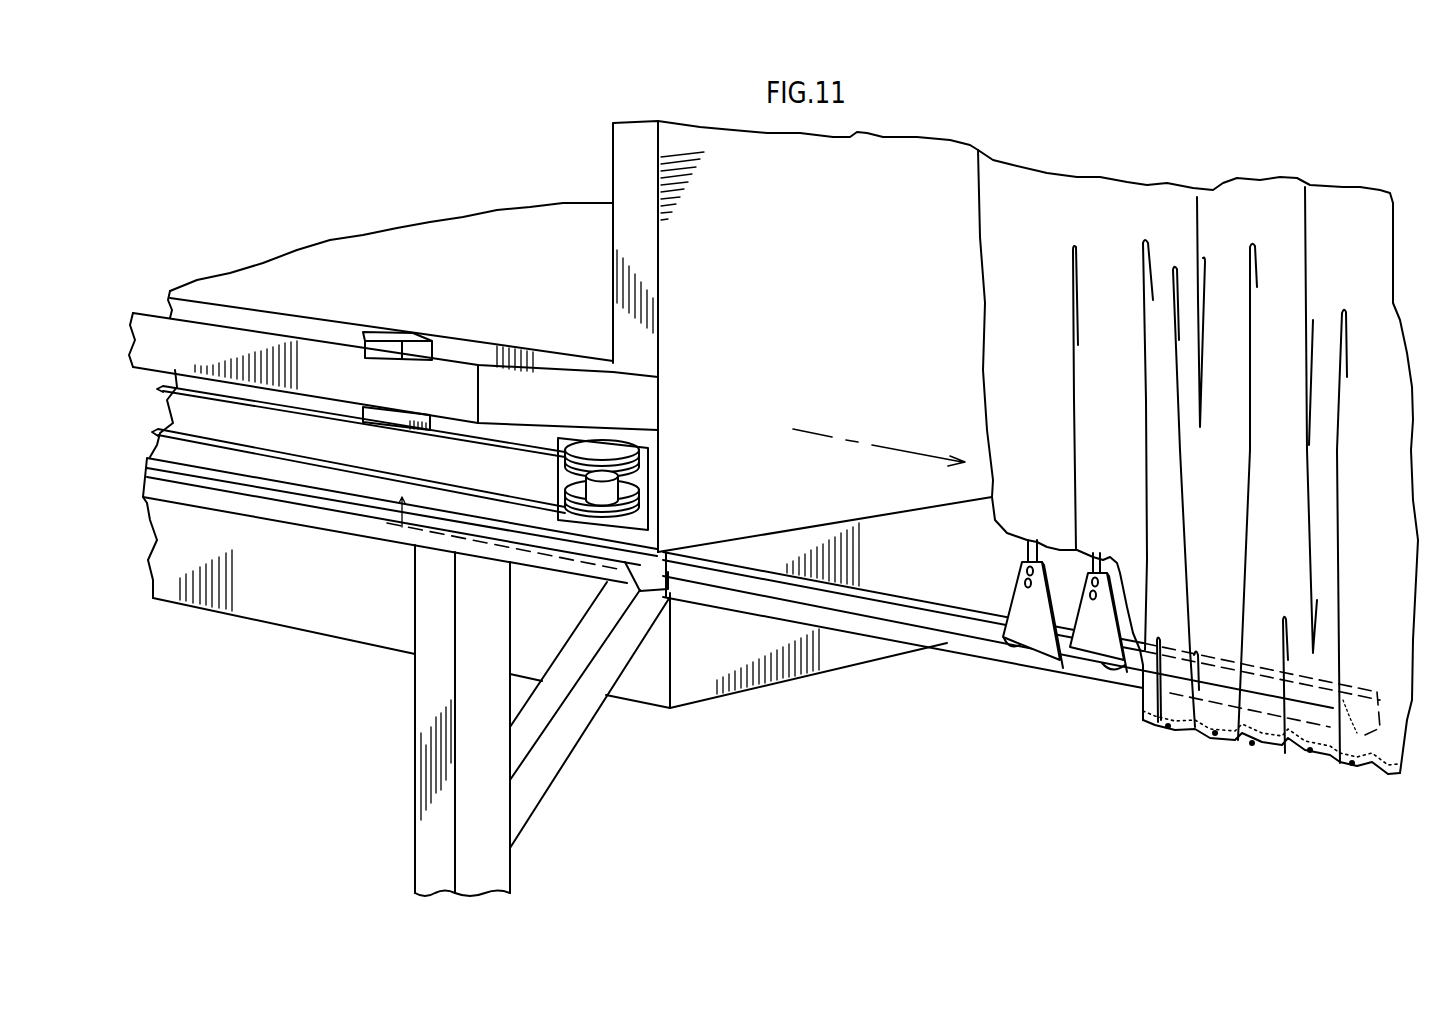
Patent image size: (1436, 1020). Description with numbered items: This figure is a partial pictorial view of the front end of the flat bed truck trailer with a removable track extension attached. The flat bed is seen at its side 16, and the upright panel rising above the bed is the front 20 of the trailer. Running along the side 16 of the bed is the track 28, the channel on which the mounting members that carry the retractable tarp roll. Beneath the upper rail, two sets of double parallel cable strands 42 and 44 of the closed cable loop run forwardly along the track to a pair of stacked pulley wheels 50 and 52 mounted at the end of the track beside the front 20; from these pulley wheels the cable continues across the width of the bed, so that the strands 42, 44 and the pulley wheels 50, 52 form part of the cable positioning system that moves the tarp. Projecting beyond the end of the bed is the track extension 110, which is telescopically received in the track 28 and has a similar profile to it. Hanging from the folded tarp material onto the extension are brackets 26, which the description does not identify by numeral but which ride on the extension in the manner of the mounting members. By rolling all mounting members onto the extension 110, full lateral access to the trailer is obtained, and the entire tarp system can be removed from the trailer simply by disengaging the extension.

The side 16 is at (279, 613).
The front 20 is at (797, 260).
The hanger bracket 26 is at (1018, 588).
The track 28 is at (318, 517).
The double parallel strands 42 is at (461, 444).
The double parallel strands 44 is at (517, 497).
The pulley wheel 50 is at (626, 448).
The pulley wheel 52 is at (650, 492).
The track extension 110 is at (988, 647).